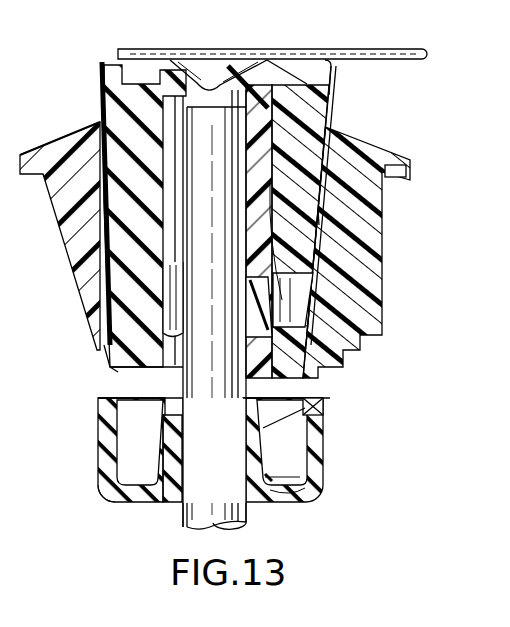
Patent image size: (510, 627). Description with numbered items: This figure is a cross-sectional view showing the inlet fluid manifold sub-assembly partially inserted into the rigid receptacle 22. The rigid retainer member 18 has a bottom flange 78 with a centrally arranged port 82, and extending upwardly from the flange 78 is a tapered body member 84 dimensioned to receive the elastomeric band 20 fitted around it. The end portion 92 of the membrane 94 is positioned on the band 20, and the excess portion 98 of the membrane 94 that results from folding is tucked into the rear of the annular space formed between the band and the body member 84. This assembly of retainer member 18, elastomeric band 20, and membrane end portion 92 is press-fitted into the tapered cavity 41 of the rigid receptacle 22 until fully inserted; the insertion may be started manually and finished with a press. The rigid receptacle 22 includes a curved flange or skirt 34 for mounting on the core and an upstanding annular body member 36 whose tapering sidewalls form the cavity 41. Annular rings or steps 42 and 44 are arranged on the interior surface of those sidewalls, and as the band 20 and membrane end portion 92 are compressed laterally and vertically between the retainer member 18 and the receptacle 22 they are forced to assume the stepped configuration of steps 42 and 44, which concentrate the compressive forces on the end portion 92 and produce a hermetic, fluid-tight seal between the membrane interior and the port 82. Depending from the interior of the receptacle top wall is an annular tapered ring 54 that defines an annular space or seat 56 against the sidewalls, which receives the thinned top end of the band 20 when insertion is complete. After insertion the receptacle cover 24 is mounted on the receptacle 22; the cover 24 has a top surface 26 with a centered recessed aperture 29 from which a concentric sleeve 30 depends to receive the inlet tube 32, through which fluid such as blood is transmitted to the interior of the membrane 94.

The rigid retainer member 18 is at (331, 90).
The elastomeric band 20 is at (335, 123).
The rigid receptacle 22 is at (79, 337).
The receptacle cover 24 is at (331, 452).
The top surface 26 is at (290, 492).
The recessed aperture 29 is at (177, 493).
The concentric sleeve 30 is at (322, 406).
The tube 32 is at (197, 133).
The curved flange or skirt 34 is at (373, 158).
The annular body member 36 is at (238, 392).
The tapered cavity 41 is at (108, 358).
The step 42 is at (318, 217).
The step 44 is at (290, 310).
The annular tapered ring 54 is at (140, 392).
The annular space or seat 56 is at (117, 371).
The bottom flange 78 is at (282, 60).
The port 82 is at (218, 86).
The tapered body member 84 is at (160, 268).
The end portion 92 is at (118, 57).
The membrane 94 is at (387, 49).
The excess portion 98 is at (264, 302).